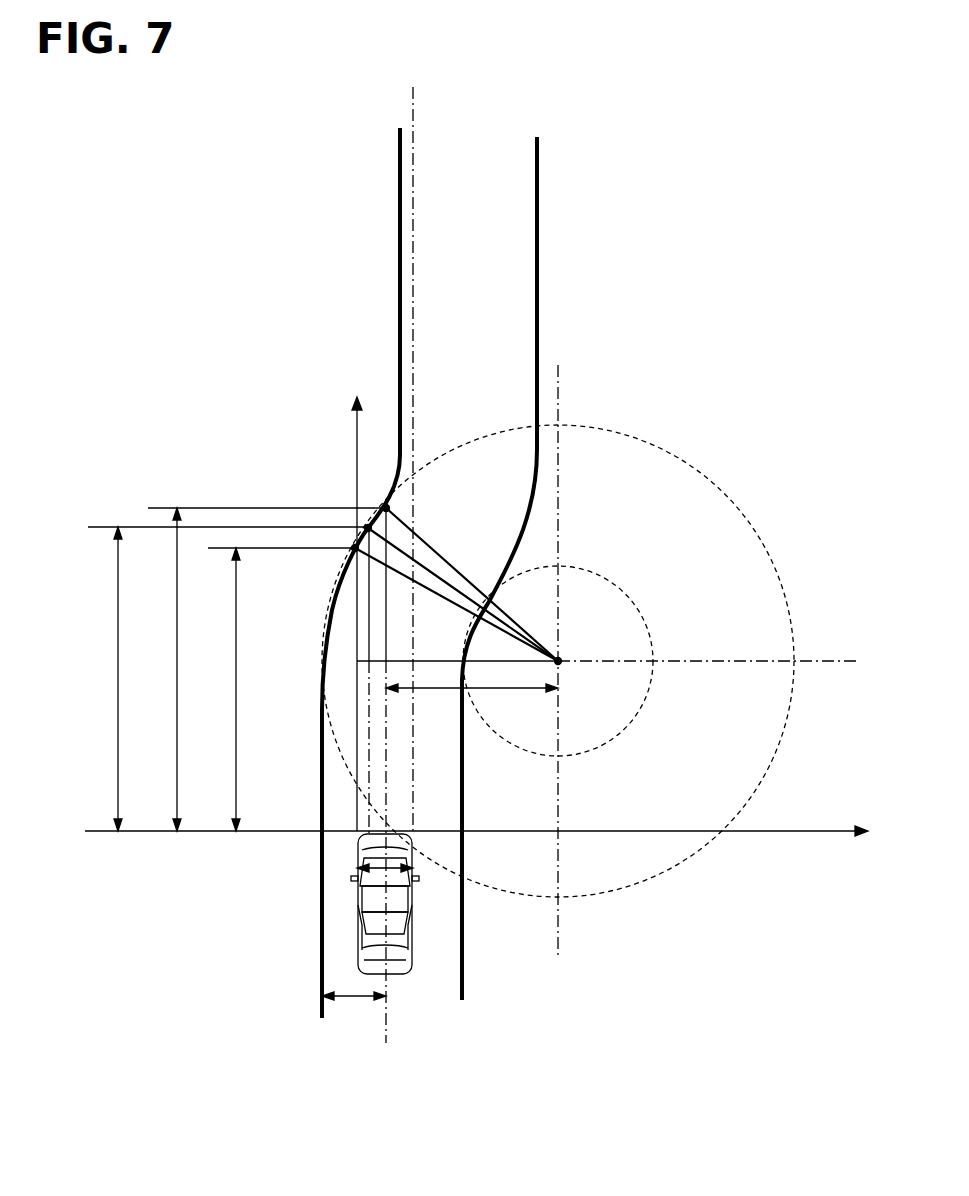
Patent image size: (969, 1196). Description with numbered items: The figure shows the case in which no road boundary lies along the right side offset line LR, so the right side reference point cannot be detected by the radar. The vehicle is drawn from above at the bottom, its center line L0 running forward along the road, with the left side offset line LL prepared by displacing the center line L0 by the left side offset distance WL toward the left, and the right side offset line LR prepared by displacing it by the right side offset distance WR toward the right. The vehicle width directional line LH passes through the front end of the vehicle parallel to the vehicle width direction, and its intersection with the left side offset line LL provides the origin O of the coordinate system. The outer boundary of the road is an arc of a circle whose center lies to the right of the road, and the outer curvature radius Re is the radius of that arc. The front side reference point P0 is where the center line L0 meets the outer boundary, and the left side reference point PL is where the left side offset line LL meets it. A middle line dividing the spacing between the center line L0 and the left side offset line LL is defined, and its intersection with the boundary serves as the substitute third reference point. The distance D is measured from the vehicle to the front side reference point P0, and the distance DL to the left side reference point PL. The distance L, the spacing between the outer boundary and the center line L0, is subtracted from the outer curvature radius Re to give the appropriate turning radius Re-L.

The front side reference point P0 is at (383, 503).
The left side reference point PL is at (352, 549).
The distance D is at (267, 669).
The distance DL is at (281, 689).
The outer curvature radius Re is at (421, 538).
The appropriate turning radius Re-L is at (472, 701).
The origin O is at (476, 646).
The left side offset line LL is at (352, 808).
The right side offset line LR is at (414, 805).
The vehicle width directional line LH is at (734, 833).
The center line L0 is at (388, 1027).
The distance L is at (354, 1010).
The left side offset distance WL is at (357, 858).
The right side offset distance WR is at (408, 857).